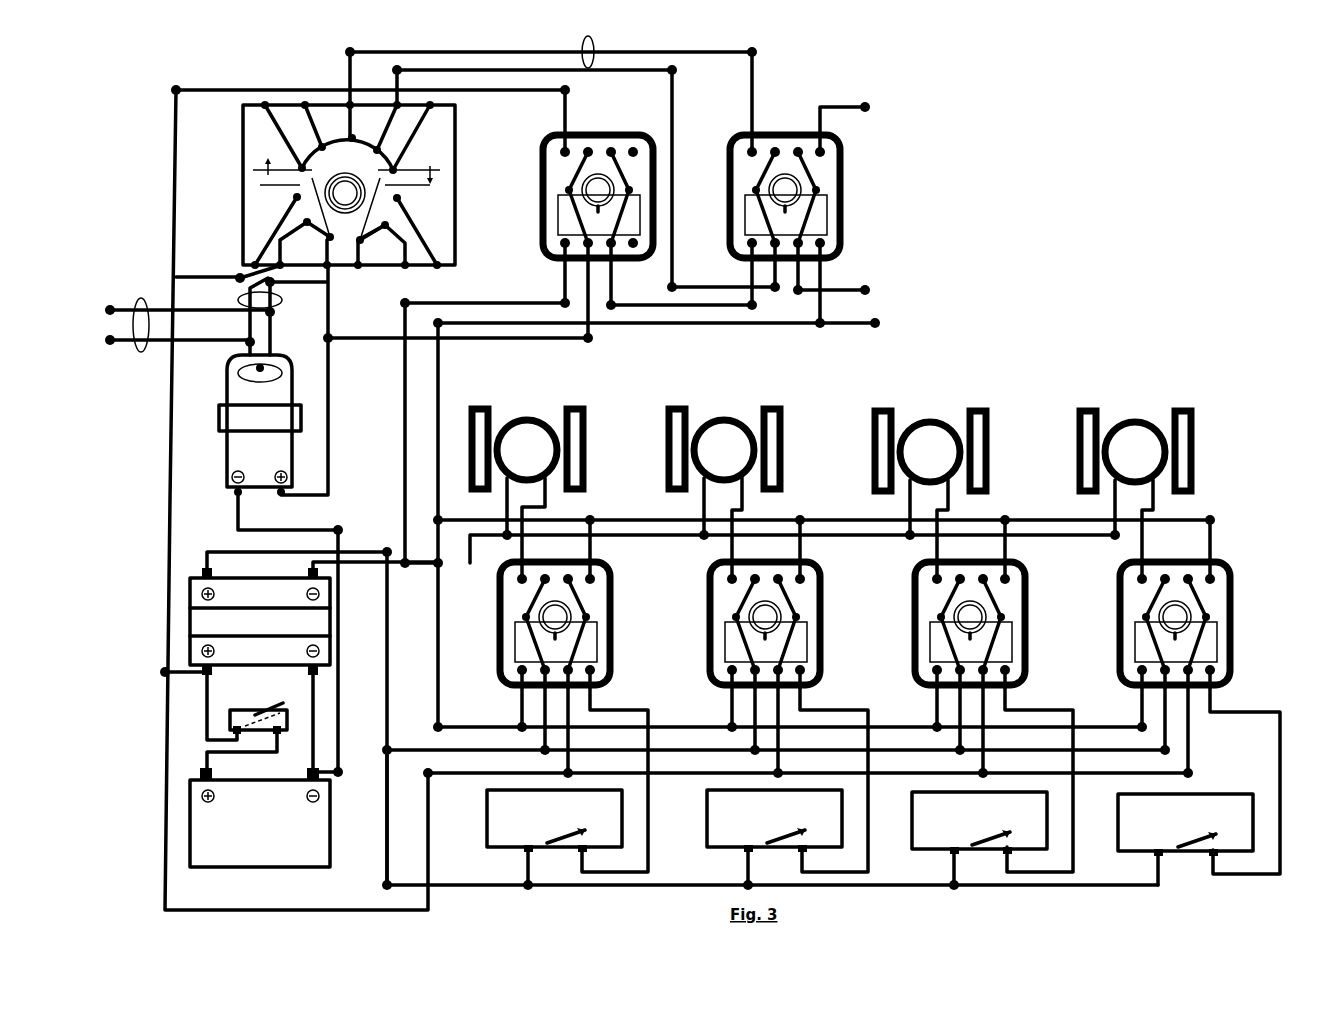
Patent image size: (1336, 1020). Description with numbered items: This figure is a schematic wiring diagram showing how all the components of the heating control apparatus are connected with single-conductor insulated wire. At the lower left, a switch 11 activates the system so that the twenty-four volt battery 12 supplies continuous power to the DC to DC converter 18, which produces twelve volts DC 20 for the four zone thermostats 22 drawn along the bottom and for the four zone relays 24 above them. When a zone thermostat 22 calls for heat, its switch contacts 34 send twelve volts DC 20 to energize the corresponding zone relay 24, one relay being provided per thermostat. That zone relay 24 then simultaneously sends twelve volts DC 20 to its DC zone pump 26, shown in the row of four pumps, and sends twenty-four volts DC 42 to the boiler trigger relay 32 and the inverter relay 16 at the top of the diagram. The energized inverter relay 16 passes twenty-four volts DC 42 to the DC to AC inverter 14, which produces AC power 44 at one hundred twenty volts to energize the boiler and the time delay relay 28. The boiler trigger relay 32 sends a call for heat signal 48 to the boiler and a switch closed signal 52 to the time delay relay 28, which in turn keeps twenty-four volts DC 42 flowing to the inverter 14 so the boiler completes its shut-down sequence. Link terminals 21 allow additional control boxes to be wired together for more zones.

The switch 11 is at (280, 703).
The 24 volt battery 12 is at (217, 868).
The DC to AC inverter 14 is at (227, 468).
The inverter relay 16 is at (543, 232).
The DC to DC converter 18 is at (200, 578).
The 12 volts DC 20 is at (387, 710).
The link terminals 21 is at (876, 322).
The zone thermostat 22 is at (487, 838).
The zone relay 24 is at (500, 667).
The DC zone pump 26 is at (528, 418).
The time delay relay 28 is at (243, 238).
The boiler trigger relay 32 is at (730, 235).
The switch contacts 34 is at (575, 848).
The 24 volts DC 42 is at (328, 412).
The 120 volts AC power 44 is at (140, 300).
The call for heat signal 48 is at (866, 106).
The switch closed signal 52 is at (588, 68).